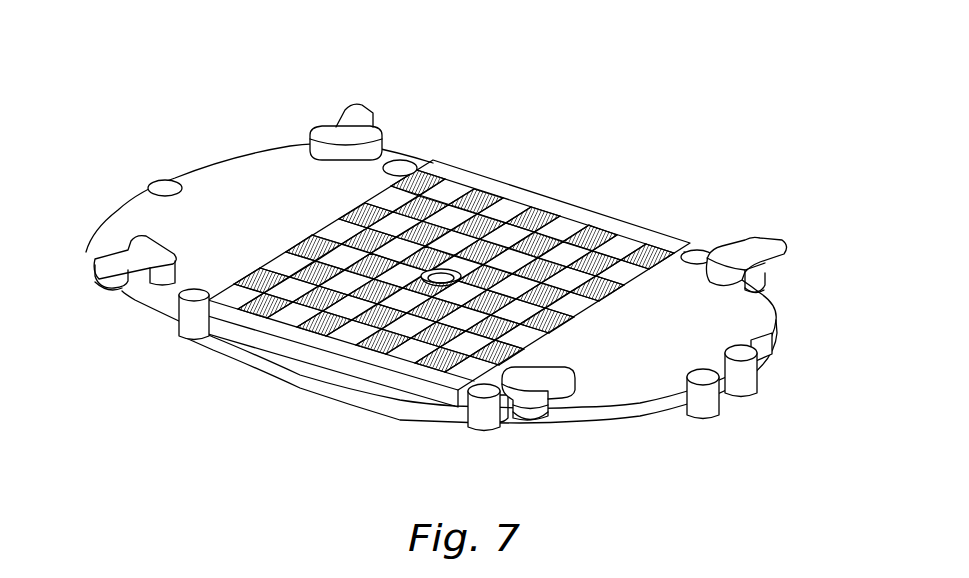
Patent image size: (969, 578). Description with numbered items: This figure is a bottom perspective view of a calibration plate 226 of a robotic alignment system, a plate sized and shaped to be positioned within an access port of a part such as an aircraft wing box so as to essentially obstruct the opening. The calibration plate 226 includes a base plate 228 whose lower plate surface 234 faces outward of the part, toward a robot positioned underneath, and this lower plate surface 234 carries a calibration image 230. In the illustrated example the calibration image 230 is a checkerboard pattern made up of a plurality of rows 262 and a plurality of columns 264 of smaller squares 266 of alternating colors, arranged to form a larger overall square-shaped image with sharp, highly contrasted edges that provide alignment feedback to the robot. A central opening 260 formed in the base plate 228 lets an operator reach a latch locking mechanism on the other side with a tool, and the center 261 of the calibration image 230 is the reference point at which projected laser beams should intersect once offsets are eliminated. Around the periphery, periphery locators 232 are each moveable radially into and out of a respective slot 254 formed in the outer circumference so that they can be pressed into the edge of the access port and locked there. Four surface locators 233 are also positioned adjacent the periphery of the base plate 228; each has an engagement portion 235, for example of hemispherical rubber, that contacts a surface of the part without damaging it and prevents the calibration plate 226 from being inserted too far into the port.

The calibration plate 226 is at (622, 106).
The base plate 228 is at (780, 312).
The calibration image 230 is at (459, 287).
The periphery locators 232 is at (150, 188).
The surface locators 233 is at (370, 121).
The lower plate surface 234 is at (246, 215).
The engagement portion 235 is at (107, 288).
The slot 254 is at (147, 190).
The central opening 260 is at (472, 297).
The center of calibration image 261 is at (443, 285).
The rows 262 is at (467, 180).
The columns 264 is at (618, 297).
The smaller squares 266 is at (254, 338).